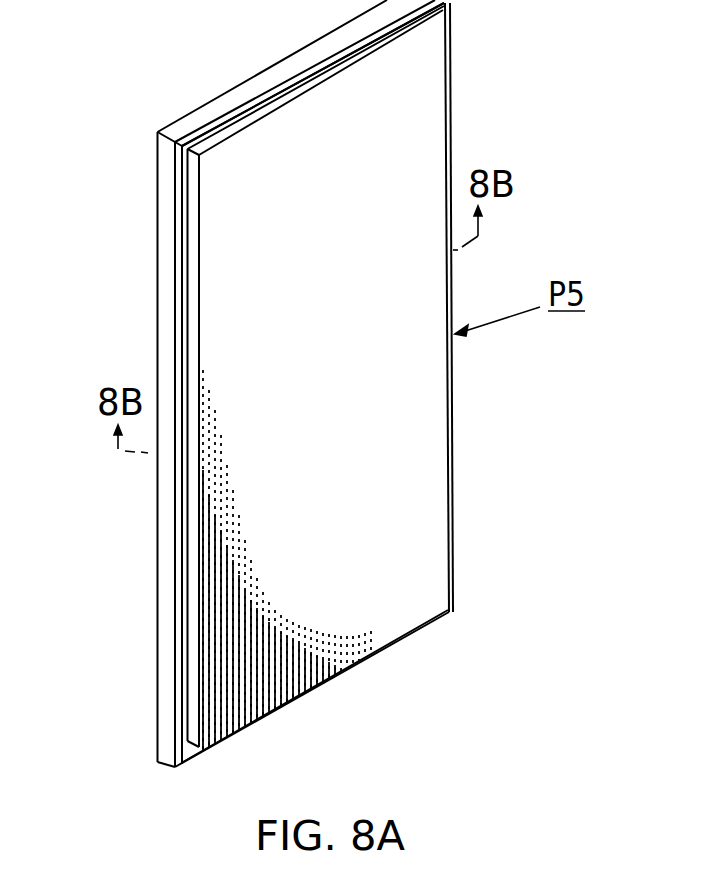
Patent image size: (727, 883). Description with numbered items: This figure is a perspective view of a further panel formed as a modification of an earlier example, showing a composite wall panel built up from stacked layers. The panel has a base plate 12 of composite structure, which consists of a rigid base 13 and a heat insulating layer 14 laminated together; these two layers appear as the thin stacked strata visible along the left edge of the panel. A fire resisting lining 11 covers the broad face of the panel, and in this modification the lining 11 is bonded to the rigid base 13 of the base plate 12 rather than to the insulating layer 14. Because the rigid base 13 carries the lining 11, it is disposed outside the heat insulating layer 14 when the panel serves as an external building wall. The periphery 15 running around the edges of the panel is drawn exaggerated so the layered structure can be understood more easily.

The fire resisting lining 11 is at (425, 500).
The base plate 12 is at (235, 383).
The rigid base 13 is at (174, 248).
The heat insulating layer 14 is at (158, 203).
The periphery 15 is at (277, 93).